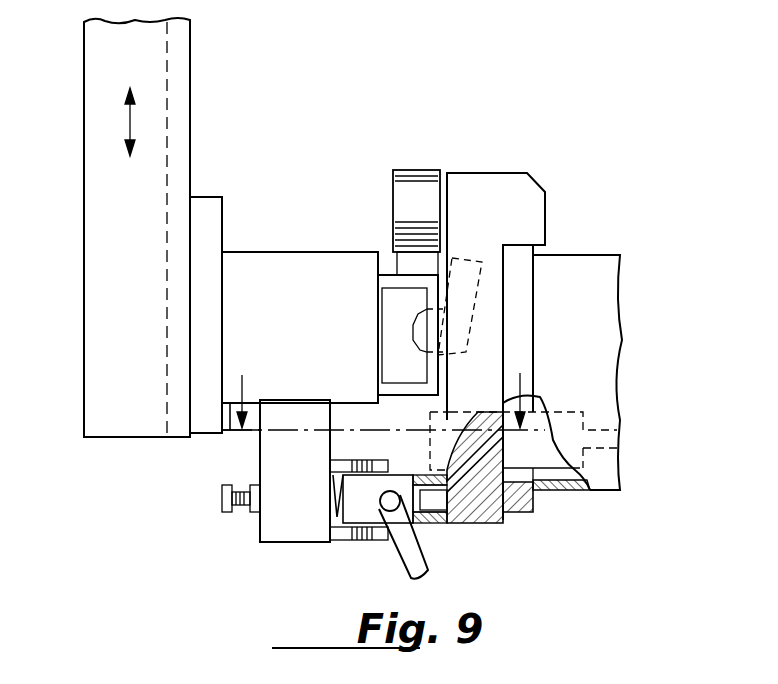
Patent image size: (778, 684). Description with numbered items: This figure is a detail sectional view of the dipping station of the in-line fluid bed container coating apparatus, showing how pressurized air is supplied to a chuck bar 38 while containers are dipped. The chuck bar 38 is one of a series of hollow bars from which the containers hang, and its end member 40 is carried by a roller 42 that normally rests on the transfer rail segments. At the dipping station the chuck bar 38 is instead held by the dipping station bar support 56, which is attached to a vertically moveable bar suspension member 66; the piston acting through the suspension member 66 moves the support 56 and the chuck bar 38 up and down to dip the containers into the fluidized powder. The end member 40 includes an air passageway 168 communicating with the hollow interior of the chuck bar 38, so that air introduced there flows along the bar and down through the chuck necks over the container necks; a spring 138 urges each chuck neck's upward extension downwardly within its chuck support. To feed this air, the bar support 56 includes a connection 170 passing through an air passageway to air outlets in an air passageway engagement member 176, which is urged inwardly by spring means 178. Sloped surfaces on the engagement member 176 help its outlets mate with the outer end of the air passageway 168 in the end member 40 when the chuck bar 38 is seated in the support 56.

The vertically moveable bar suspension member 66 is at (112, 267).
The dipping station bar support 56 is at (317, 287).
The roller 42 is at (410, 188).
The end member 40 is at (514, 198).
The chuck bar 38 is at (597, 275).
The spring means 178 is at (330, 500).
The air passageway engagement member 176 is at (357, 512).
The connection 170 is at (414, 558).
The air passageway 168 is at (482, 518).
The spring 138 is at (552, 453).